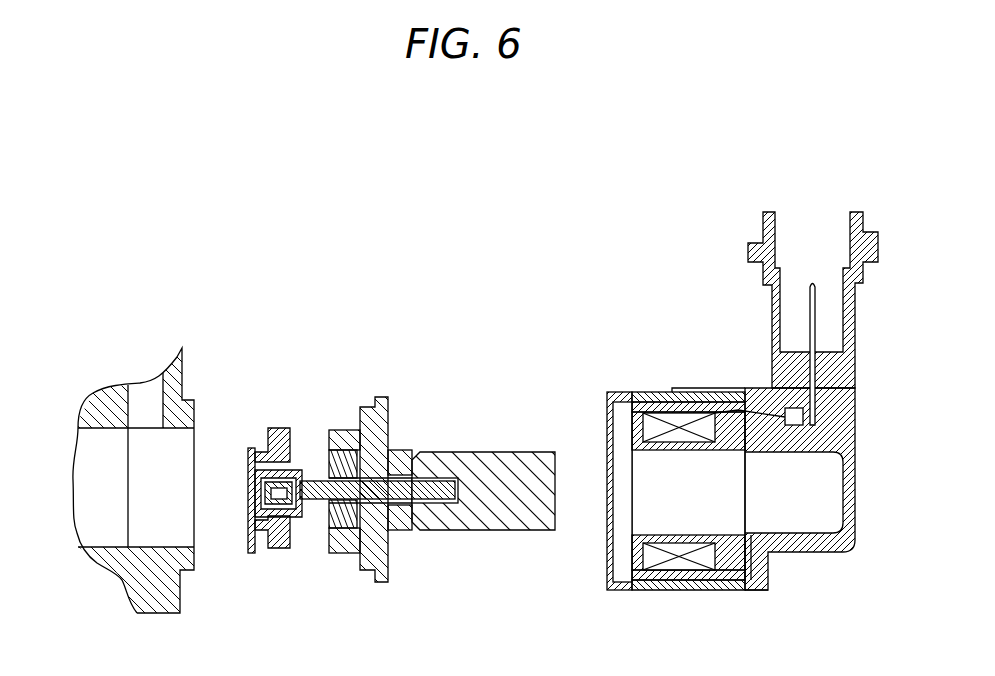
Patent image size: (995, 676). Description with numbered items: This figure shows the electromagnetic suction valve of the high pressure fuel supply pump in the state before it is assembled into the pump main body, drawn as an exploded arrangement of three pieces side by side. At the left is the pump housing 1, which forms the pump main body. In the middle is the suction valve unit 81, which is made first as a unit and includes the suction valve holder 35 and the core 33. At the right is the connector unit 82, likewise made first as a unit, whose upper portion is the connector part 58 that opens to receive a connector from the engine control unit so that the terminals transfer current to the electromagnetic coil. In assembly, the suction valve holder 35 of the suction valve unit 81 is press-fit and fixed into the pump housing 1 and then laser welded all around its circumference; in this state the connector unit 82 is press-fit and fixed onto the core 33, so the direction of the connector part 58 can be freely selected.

The pump housing 1 is at (87, 403).
The suction valve holder 35 is at (262, 562).
The suction valve unit 81 is at (378, 392).
The core 33 is at (495, 532).
The connector unit 82 is at (625, 382).
The connector part 58 is at (752, 245).